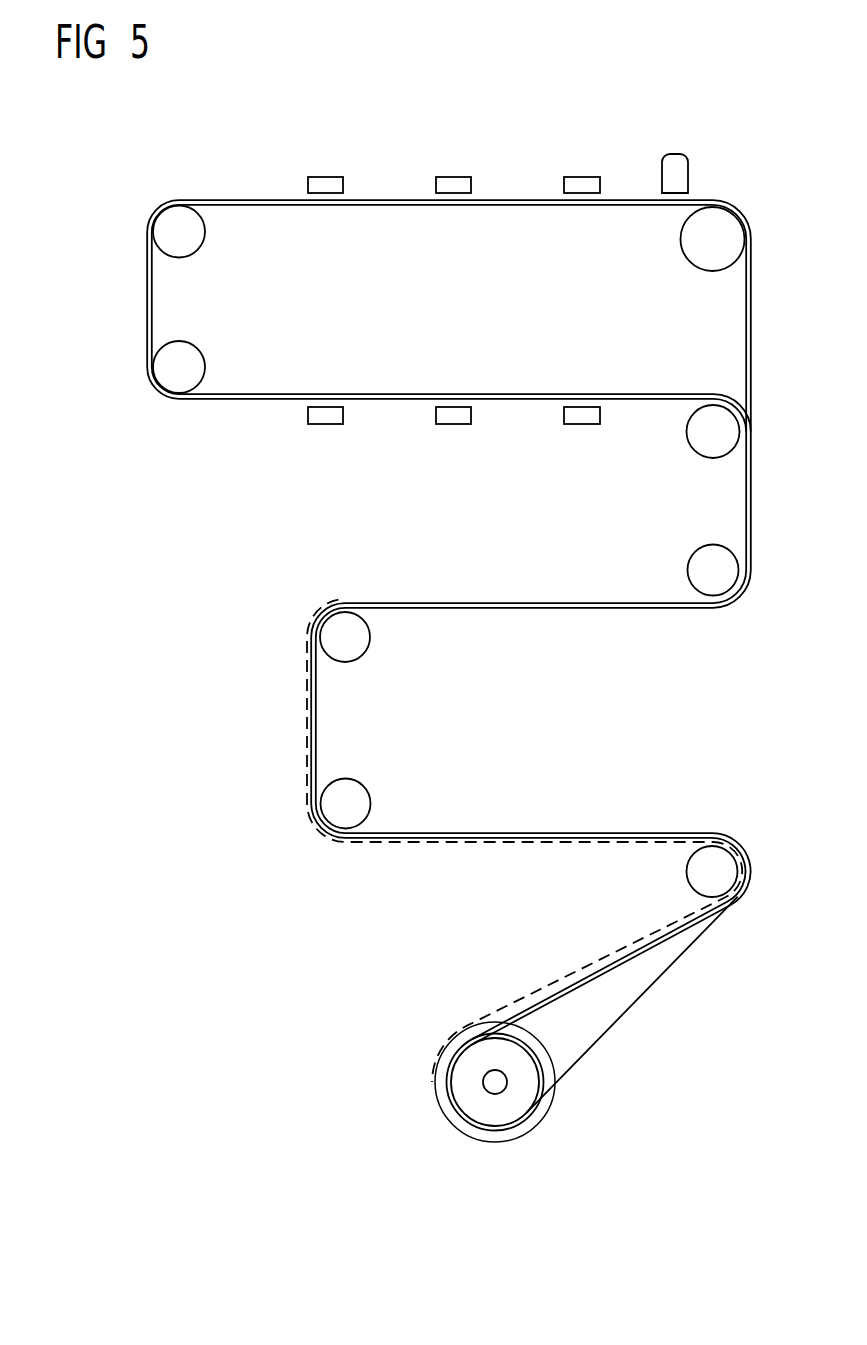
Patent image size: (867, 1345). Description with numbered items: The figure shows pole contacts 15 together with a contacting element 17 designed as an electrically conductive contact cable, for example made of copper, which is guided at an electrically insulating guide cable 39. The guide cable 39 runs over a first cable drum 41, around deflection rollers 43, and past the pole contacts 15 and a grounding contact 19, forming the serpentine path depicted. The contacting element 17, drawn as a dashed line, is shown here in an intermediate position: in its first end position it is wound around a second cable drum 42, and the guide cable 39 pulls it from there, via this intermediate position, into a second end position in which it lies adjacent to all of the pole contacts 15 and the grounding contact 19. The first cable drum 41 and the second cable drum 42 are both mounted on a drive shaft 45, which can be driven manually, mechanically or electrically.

The pole contacts 15 is at (323, 177).
The contacting element 17 is at (590, 964).
The grounding contact 19 is at (688, 172).
The guide cable 39 is at (622, 1017).
The first cable drum 41 is at (538, 1097).
The second cable drum 42 is at (443, 1113).
The deflection rollers 43 is at (370, 799).
The drive shaft 45 is at (495, 1094).